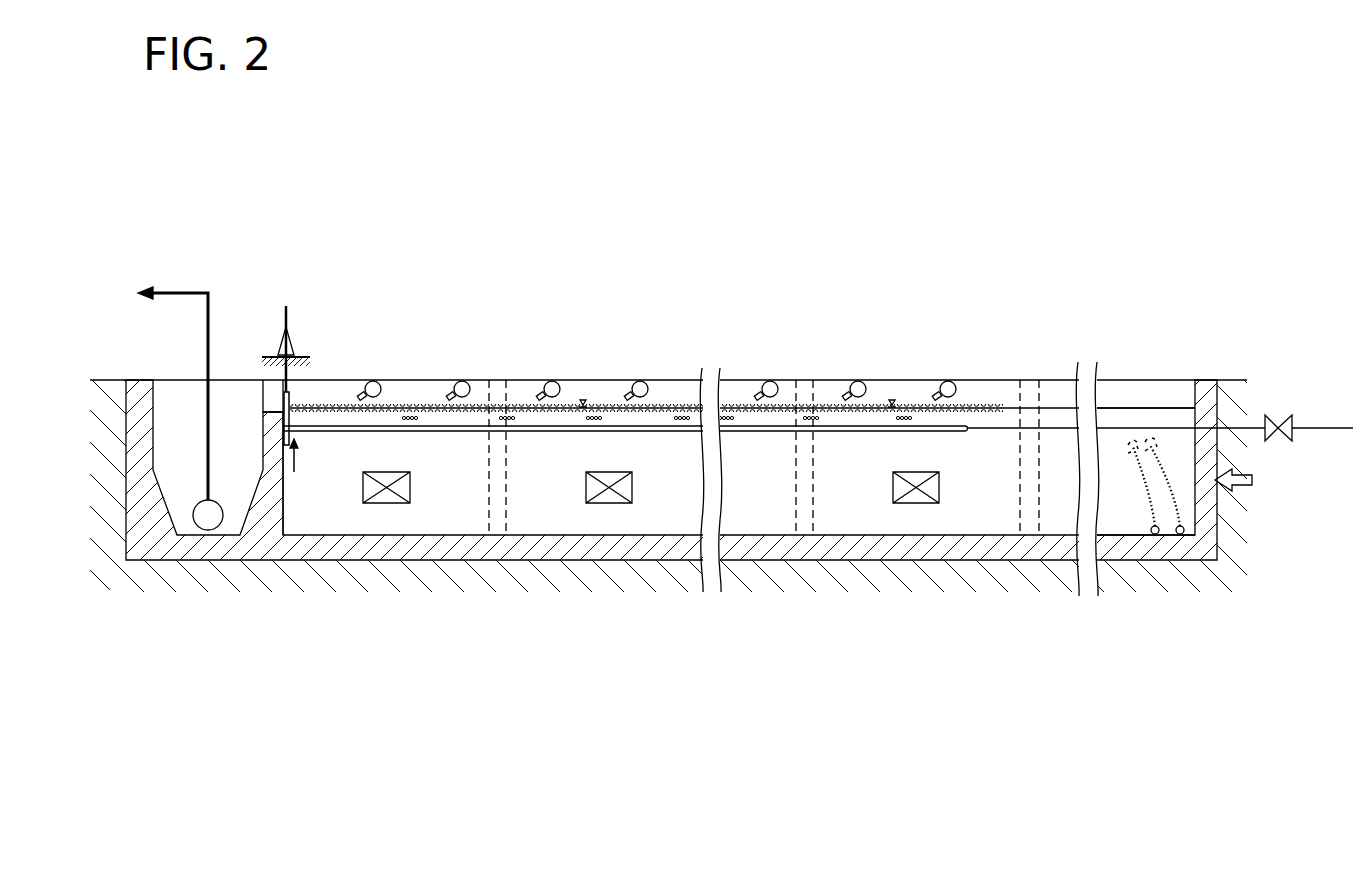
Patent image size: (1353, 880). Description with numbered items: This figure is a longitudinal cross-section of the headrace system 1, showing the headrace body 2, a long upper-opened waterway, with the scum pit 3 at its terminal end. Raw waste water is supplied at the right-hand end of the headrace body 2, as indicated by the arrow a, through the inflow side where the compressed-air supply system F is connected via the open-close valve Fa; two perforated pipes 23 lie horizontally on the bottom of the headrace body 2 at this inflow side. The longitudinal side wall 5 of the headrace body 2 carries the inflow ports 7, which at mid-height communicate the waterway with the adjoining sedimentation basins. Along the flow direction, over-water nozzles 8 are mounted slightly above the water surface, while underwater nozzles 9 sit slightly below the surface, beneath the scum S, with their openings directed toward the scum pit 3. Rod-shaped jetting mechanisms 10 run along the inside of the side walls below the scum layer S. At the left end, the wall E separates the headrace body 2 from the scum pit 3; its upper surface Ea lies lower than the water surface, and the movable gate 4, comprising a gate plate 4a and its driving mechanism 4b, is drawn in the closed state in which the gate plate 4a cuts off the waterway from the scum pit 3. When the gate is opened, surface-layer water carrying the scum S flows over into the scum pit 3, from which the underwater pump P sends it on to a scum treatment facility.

The headrace system 1 is at (598, 370).
The headrace body 2 is at (1152, 372).
The scum pit 3 is at (180, 408).
The movable gate 4 is at (315, 389).
The gate plate 4a is at (289, 400).
The driving mechanism 4b is at (291, 346).
The side wall 5 is at (1183, 447).
The inflow port 7 is at (411, 488).
The over-water nozzle 8 is at (375, 380).
The underwater nozzle 9 is at (412, 422).
The jetting mechanism 10 is at (968, 428).
The perforated pipe 23 is at (1181, 536).
The wall E is at (280, 485).
The upper surface of the wall Ea is at (262, 411).
The scum S is at (413, 416).
The underwater pump P is at (208, 515).
The compressed-air supply system F is at (1318, 428).
The open-close valve Fa is at (1278, 415).
The arrow a is at (1233, 484).